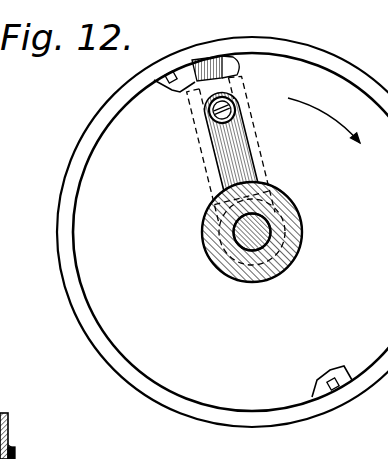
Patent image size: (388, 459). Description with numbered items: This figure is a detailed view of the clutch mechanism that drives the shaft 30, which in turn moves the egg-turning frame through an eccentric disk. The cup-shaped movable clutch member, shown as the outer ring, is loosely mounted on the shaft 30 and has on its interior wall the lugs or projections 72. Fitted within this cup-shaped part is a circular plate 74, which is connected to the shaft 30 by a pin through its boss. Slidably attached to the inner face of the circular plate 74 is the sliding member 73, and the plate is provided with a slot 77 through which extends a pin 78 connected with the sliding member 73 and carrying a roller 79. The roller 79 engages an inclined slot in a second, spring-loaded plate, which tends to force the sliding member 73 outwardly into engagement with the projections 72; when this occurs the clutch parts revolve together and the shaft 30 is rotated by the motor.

The projections 72 is at (165, 72).
The sliding member 73 is at (228, 158).
The circular plate 74 is at (8, 413).
The slot 77 is at (262, 168).
The pin 78 is at (208, 126).
The roller 79 is at (10, 447).
The shaft 30 is at (302, 242).